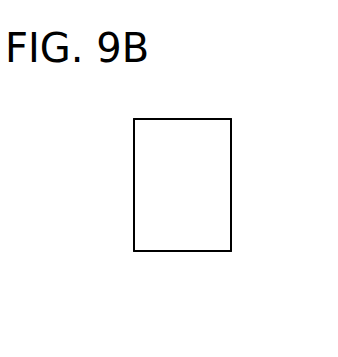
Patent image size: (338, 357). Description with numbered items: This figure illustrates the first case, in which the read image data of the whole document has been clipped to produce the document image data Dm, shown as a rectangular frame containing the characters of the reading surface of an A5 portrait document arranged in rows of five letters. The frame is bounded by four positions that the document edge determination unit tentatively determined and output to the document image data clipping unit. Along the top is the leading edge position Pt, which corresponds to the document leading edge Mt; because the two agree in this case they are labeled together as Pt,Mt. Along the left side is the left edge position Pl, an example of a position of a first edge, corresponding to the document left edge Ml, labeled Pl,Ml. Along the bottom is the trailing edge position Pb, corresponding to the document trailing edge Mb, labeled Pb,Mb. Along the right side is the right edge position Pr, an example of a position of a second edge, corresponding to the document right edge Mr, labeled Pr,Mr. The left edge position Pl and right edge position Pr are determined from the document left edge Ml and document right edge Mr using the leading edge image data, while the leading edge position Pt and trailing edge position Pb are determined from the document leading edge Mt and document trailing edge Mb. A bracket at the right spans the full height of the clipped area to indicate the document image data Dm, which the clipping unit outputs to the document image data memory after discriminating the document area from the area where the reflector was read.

The leading edge position and document leading edge Pt,Mt is at (195, 92).
The leading edge position Pt is at (195, 92).
The document leading edge Mt is at (187, 119).
The left edge position and document left edge Pl,Ml is at (85, 185).
The left edge position Pl is at (85, 185).
The document left edge Ml is at (133, 182).
The trailing edge position and document trailing edge Pb,Mb is at (184, 279).
The trailing edge position Pb is at (184, 279).
The document trailing edge Mb is at (185, 251).
The right edge position and document right edge Pr,Mr is at (283, 213).
The right edge position Pr is at (283, 213).
The document right edge Mr is at (232, 181).
The document image data Dm is at (262, 119).